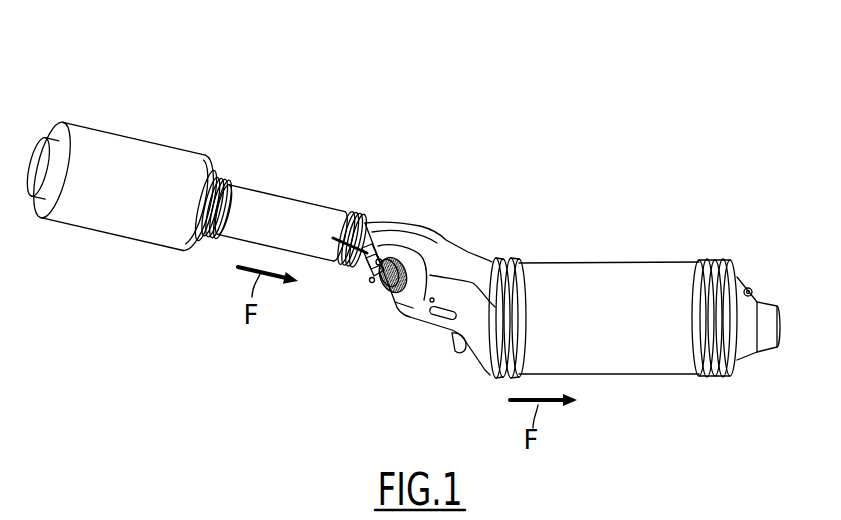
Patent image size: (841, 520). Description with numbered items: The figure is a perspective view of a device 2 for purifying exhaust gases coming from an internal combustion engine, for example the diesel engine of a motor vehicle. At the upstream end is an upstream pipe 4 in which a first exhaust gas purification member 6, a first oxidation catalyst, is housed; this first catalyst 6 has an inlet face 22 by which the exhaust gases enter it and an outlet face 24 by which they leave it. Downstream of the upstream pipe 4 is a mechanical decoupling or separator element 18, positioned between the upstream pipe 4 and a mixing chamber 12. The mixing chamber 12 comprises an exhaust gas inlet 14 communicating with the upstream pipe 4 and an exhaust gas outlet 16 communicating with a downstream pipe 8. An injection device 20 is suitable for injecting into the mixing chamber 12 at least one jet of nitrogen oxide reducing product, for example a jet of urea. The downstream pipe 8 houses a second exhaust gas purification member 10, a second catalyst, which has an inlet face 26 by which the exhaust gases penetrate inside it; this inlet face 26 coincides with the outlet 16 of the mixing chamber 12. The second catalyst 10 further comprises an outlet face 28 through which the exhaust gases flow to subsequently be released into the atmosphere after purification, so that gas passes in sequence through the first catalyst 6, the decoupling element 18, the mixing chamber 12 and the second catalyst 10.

The exhaust gas purifying device 2 is at (499, 142).
The upstream pipe 4 is at (117, 118).
The first exhaust gas purification member 6 is at (157, 127).
The downstream pipe 8 is at (668, 246).
The second exhaust gas purification member 10 is at (631, 247).
The mixing chamber 12 is at (380, 327).
The exhaust gas inlet 14 is at (357, 212).
The exhaust gas outlet 16 is at (490, 262).
The mechanical decoupling element 18 is at (276, 176).
The injection device 20 is at (348, 284).
The inlet face 22 is at (61, 130).
The outlet face 24 is at (217, 177).
The inlet face 26 is at (507, 263).
The outlet face 28 is at (710, 258).